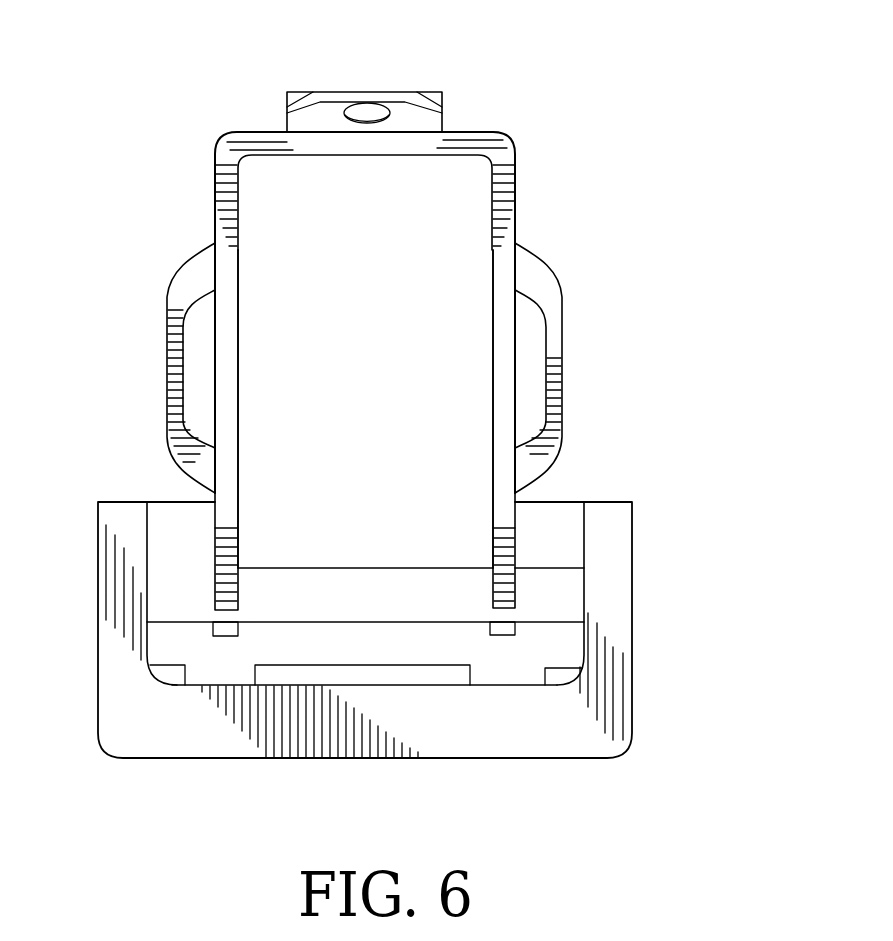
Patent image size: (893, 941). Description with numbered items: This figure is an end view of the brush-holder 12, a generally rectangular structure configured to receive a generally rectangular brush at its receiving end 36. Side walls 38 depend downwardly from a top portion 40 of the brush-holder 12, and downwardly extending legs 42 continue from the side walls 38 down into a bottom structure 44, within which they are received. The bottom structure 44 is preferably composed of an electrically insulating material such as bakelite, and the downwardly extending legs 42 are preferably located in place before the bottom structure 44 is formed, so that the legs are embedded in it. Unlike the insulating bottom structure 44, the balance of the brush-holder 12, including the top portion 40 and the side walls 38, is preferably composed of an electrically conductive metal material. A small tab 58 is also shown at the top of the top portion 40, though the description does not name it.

The brush-holder 12 is at (655, 295).
The receiving end 36 is at (422, 530).
The side walls 38 is at (213, 215).
The top portion 40 is at (460, 137).
The downwardly extending legs 42 is at (218, 565).
The bottom structure 44 is at (618, 693).
The mounting tab 58 is at (328, 117).